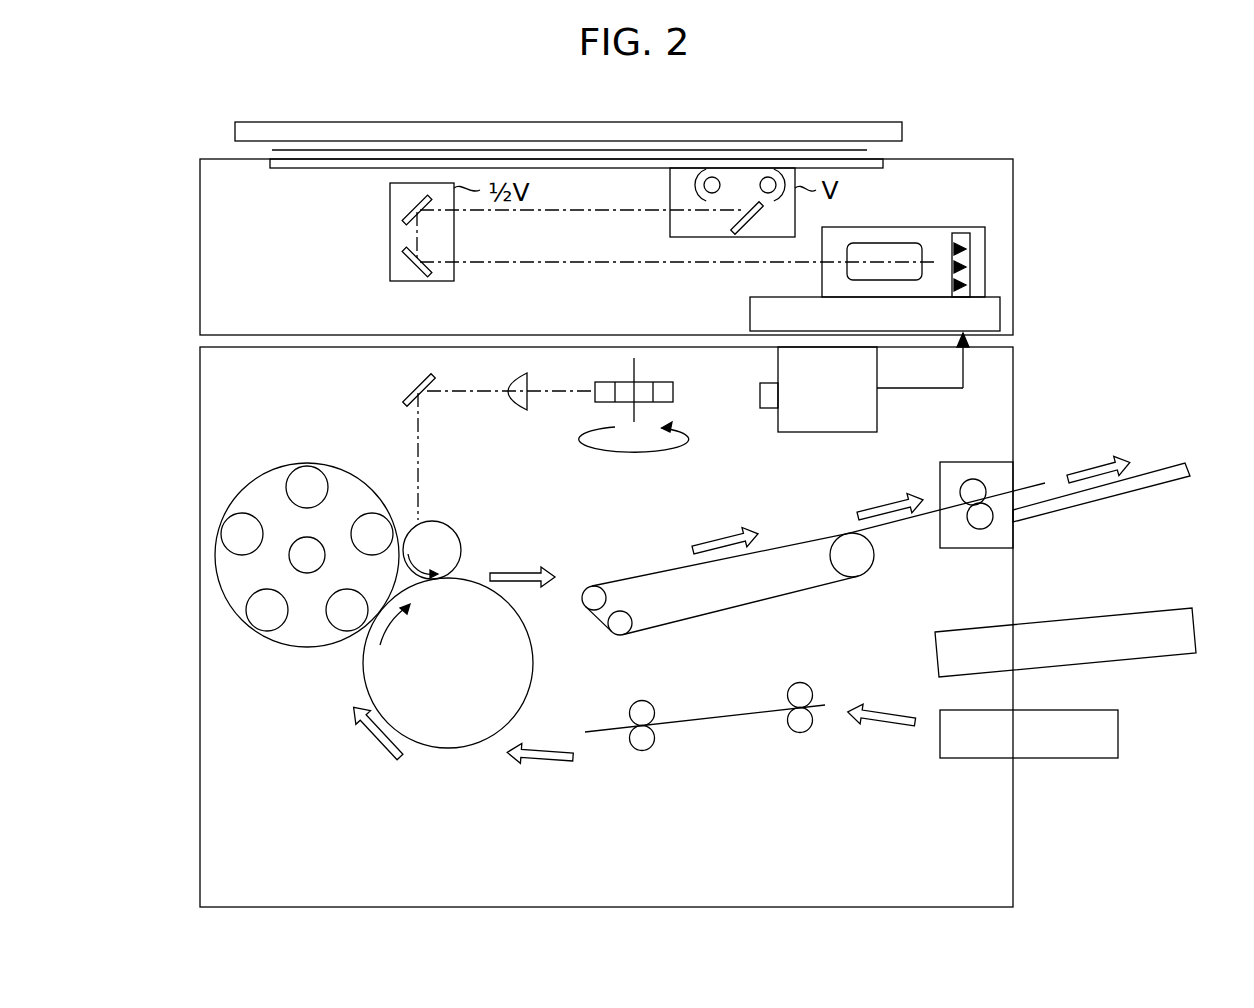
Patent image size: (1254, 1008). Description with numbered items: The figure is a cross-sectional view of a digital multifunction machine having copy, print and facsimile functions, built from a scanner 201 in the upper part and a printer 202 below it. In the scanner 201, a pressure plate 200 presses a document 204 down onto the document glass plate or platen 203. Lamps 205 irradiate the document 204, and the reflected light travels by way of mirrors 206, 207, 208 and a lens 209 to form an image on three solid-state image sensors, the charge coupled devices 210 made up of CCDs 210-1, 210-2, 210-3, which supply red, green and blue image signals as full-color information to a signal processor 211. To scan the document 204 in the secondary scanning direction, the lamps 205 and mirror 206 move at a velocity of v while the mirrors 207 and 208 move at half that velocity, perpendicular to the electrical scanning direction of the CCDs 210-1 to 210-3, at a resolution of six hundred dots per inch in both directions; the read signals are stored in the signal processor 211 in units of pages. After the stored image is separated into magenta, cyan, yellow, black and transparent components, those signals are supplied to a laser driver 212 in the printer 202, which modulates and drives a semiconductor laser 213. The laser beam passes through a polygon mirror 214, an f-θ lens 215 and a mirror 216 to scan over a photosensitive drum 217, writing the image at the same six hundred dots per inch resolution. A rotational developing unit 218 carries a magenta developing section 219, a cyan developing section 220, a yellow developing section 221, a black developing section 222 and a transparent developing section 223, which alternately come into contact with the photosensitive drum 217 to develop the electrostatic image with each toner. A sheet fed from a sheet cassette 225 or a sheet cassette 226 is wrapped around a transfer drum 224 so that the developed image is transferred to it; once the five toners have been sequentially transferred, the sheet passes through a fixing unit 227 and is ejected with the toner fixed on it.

The pressure plate 200 is at (482, 122).
The scanner 201 is at (200, 236).
The printer 202 is at (200, 395).
The platen 203 is at (877, 159).
The document 204 is at (813, 150).
The lamps 205 is at (768, 177).
The mirror 206 is at (745, 230).
The mirror 207 is at (403, 211).
The mirror 208 is at (403, 264).
The lens 209 is at (888, 243).
The charge coupled devices 210 is at (960, 233).
The charge coupled device 210-1 is at (970, 249).
The charge coupled device 210-2 is at (970, 267).
The charge coupled device 210-3 is at (970, 285).
The signal processor 211 is at (990, 315).
The laser driver 212 is at (877, 412).
The semiconductor laser 213 is at (770, 408).
The polygon mirror 214 is at (673, 388).
The f-θ lens 215 is at (518, 410).
The mirror 216 is at (406, 390).
The photosensitive drum 217 is at (452, 529).
The rotational developing unit 218 is at (340, 466).
The magenta developing section 219 is at (382, 513).
The cyan developing section 220 is at (337, 630).
The yellow developing section 221 is at (270, 631).
The black developing section 222 is at (240, 514).
The transparent developing section 223 is at (297, 467).
The transfer drum 224 is at (450, 748).
The sheet cassette 225 is at (1078, 758).
The sheet cassette 226 is at (1157, 655).
The fixing unit 227 is at (972, 548).